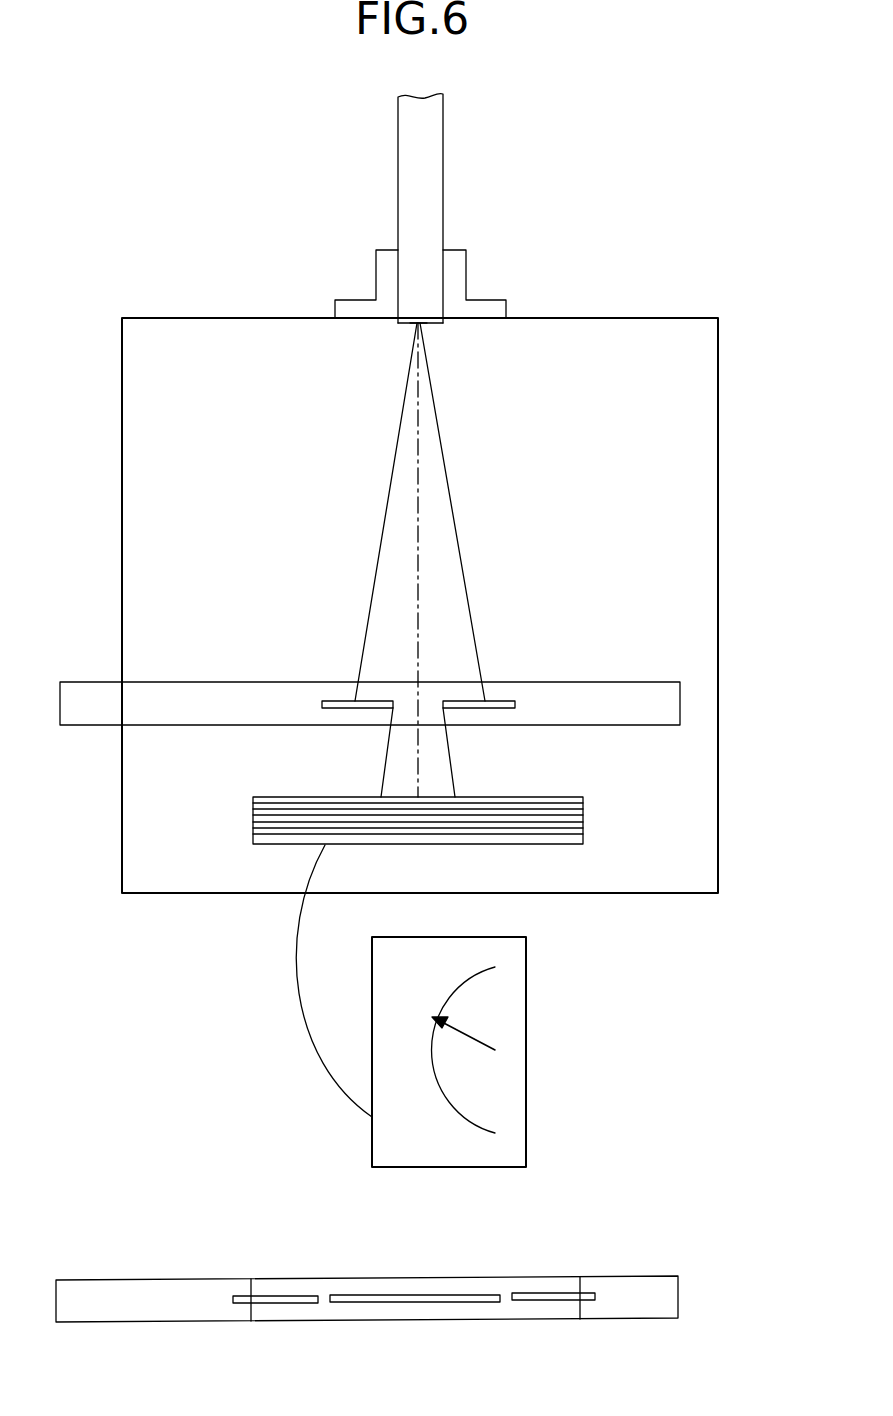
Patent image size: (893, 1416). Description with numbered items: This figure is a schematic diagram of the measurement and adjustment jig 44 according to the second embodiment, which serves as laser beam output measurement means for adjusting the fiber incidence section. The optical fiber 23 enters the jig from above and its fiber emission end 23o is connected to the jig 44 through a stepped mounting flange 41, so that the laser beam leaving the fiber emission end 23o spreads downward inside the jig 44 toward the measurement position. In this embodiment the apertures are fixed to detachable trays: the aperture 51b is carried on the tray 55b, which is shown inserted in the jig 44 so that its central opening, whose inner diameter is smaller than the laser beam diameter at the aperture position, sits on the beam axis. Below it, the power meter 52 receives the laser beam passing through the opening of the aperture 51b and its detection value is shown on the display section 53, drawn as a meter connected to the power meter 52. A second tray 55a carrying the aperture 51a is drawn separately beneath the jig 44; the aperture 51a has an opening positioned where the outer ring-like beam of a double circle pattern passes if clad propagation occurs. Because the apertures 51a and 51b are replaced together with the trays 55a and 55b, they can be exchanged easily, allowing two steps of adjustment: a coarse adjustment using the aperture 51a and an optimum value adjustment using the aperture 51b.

The optical fiber 23 is at (438, 173).
The fiber emission end 23o is at (418, 318).
The stepped flange 41 is at (462, 270).
The measurement and adjustment jig 44 is at (709, 485).
The aperture 51a is at (595, 1296).
The aperture 51b is at (515, 704).
The power meter 52 is at (583, 814).
The display section 53 is at (526, 1057).
The tray 55a is at (137, 1280).
The tray 55b is at (73, 682).